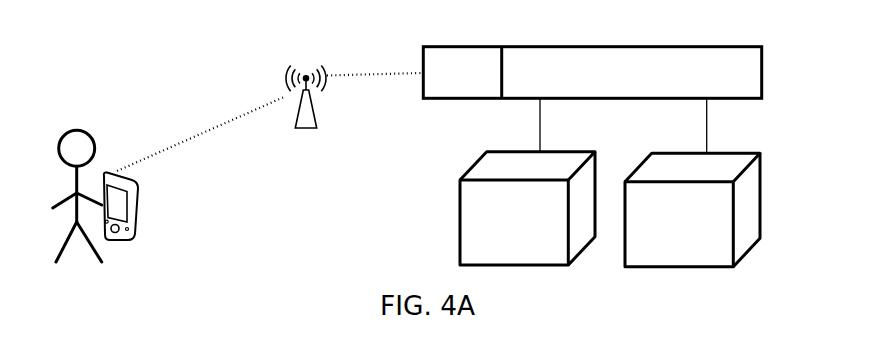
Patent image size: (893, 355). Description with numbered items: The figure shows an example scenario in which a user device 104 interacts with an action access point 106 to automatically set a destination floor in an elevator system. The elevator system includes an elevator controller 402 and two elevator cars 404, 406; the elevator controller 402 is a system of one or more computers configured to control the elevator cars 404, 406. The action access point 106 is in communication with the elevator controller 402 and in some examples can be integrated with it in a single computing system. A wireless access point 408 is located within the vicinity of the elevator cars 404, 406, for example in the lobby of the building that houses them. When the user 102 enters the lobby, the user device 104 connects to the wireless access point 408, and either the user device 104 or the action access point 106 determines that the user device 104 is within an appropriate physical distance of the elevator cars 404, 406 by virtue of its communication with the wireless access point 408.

The user 102 is at (110, 176).
The user device 104 is at (151, 206).
The action access point 106 is at (480, 60).
The elevator controller 402 is at (592, 89).
The elevator car 404 is at (537, 196).
The elevator car 406 is at (704, 198).
The wireless access point 408 is at (326, 111).